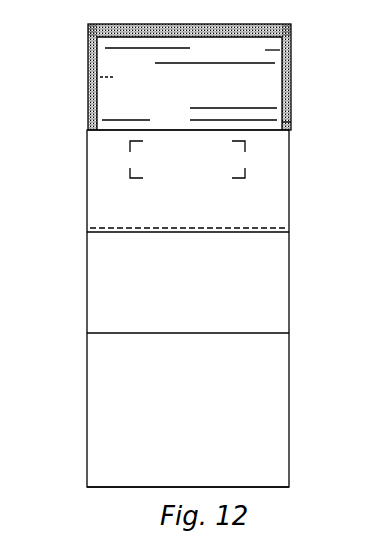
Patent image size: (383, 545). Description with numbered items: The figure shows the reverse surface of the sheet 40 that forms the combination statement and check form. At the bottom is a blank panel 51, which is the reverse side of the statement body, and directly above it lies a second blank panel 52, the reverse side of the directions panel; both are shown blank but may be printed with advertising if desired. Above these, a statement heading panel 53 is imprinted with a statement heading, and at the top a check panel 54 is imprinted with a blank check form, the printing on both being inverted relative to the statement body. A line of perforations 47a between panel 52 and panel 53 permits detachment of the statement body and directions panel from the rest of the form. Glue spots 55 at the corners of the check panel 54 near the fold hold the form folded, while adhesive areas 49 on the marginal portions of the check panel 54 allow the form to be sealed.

The sheet 40 is at (88, 55).
The adhesive areas 49 is at (95, 85).
The blank check form panel 54 is at (268, 50).
The glue spots 55 is at (291, 127).
The statement heading panel 53 is at (100, 186).
The perforations 47a is at (275, 229).
The blank panel 52 is at (100, 279).
The blank panel 51 is at (100, 390).